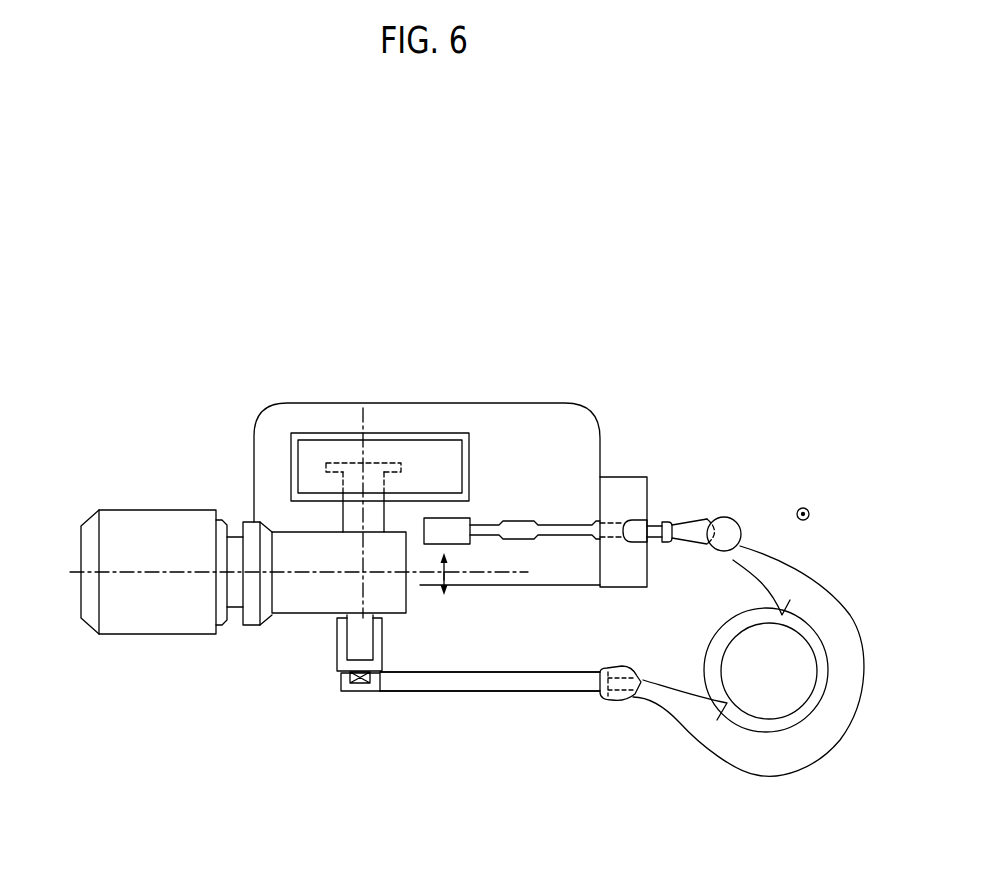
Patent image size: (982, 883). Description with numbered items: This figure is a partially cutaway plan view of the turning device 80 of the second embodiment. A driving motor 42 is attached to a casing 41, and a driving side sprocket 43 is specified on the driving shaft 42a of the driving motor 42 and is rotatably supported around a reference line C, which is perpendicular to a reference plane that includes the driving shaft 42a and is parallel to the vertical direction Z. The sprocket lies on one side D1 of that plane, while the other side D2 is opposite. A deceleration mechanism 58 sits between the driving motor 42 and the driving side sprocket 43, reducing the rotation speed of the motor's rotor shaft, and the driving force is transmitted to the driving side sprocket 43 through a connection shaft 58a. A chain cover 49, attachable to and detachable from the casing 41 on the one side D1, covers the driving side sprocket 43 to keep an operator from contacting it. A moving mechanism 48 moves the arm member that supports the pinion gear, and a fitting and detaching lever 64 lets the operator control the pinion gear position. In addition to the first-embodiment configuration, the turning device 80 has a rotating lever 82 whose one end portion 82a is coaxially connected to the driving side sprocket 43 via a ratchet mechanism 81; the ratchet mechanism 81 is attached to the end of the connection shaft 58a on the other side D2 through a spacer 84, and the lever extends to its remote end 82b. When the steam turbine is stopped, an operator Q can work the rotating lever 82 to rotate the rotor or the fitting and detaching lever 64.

The turning device 80 is at (131, 423).
The driving motor 42 is at (133, 518).
The casing 41 is at (268, 474).
The deceleration mechanism 58 is at (299, 605).
The connection shaft 58a is at (350, 515).
The driving side sprocket 43 is at (387, 462).
The chain cover 49 is at (433, 453).
The reference line C is at (362, 417).
The driving shaft 42a is at (500, 577).
The one side D1 is at (462, 568).
The other side D2 is at (463, 595).
The moving mechanism 48 is at (665, 488).
The fitting and detaching lever 64 is at (693, 532).
The vertical direction Z is at (803, 497).
The operator Q is at (750, 752).
The spacer 84 is at (342, 662).
The ratchet mechanism 81 is at (360, 686).
The rotating lever 82 is at (497, 682).
The one end portion 82a is at (395, 682).
The tube connector 82b is at (620, 700).